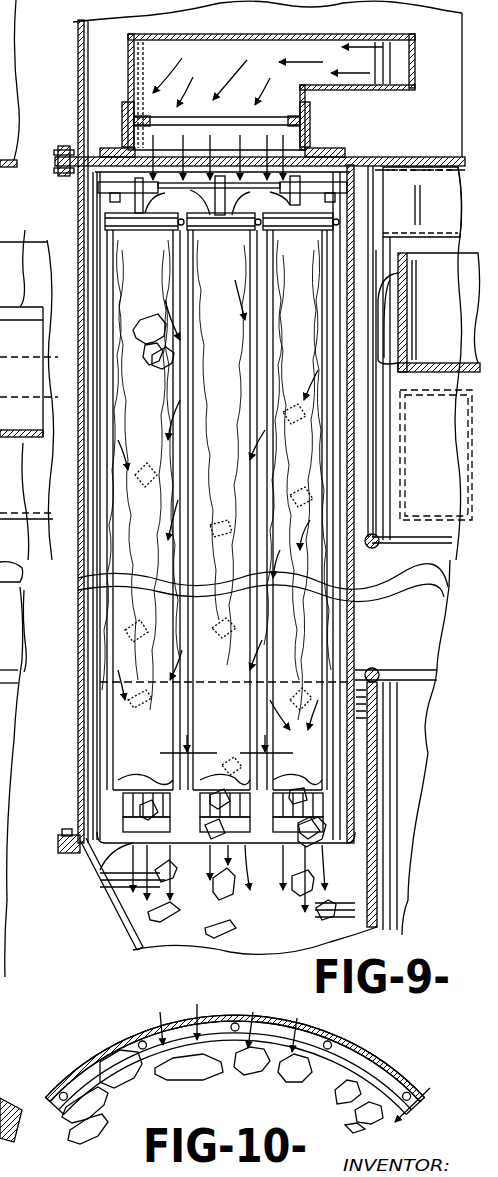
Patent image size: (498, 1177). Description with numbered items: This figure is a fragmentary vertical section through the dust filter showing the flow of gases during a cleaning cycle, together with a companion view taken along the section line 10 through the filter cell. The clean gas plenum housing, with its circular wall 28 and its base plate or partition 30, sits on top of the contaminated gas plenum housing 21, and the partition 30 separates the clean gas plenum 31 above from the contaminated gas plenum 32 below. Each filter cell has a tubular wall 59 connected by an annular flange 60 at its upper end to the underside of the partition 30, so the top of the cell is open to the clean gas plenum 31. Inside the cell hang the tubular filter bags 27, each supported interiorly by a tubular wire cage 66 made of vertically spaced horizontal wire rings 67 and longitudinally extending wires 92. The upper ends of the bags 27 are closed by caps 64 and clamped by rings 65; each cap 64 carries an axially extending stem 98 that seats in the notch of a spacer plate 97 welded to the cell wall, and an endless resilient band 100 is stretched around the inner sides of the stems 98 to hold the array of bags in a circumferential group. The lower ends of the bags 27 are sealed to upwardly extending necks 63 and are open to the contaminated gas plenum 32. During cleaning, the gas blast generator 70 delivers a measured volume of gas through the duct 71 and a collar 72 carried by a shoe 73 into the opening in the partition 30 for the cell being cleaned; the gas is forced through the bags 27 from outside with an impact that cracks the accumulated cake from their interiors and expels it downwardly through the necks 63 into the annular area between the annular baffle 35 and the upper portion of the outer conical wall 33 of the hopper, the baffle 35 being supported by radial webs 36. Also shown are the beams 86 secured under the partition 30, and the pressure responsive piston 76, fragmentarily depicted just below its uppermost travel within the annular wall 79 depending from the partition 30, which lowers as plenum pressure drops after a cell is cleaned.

In FIG. 9, the gas blast generator 70 is at (266, 33).
In FIG. 9, the duct 71 is at (397, 36).
In FIG. 9, the circular wall 28 is at (78, 113).
In FIG. 9, the collar 72 is at (310, 123).
In FIG. 9, the shoe 73 is at (345, 150).
In FIG. 9, the clean gas plenum 31 is at (440, 114).
In FIG. 9, the annular flange 60 is at (365, 160).
In FIG. 9, the partition 30 is at (455, 157).
In FIG. 9, the endless resilient band 100 is at (252, 182).
In FIG. 9, the caps 64 is at (208, 212).
In FIG. 9, the stem 98 is at (278, 214).
In FIG. 9, the rings 65 is at (160, 230).
In FIG. 9, the spacer plate 97 is at (317, 228).
In FIG. 9, the beams 86 is at (418, 238).
In FIG. 9, the wire rings 67 is at (152, 332).
In FIG. 10, the wire rings 67 is at (232, 1044).
In FIG. 9, the longitudinally extending wires 92 is at (166, 350).
In FIG. 10, the longitudinally extending wires 92 is at (148, 1046).
In FIG. 9, the pressure responsive piston 76 is at (418, 382).
In FIG. 9, the annular wall 79 is at (373, 438).
In FIG. 9, the tubular wall 59 is at (356, 600).
In FIG. 9, the contaminated gas plenum housing 21 is at (80, 618).
In FIG. 9, the filter bags 27 is at (110, 654).
In FIG. 10, the filter bags 27 is at (108, 1048).
In FIG. 9, the section line 10— 10 is at (222, 744).
In FIG. 9, the annular baffle 35 is at (377, 770).
In FIG. 9, the tubular wire cage 66 is at (135, 808).
In FIG. 10, the tubular wire cage 66 is at (100, 1088).
In FIG. 9, the necks 63 is at (100, 872).
In FIG. 9, the outer conical wall 33 is at (118, 921).
In FIG. 9, the radial webs 36 is at (284, 934).
In FIG. 9, the contaminated gas plenum 32 is at (396, 905).